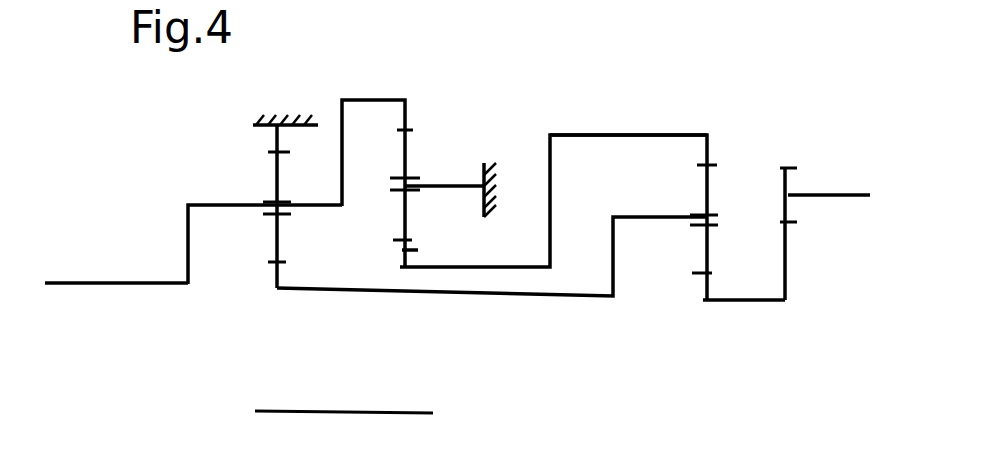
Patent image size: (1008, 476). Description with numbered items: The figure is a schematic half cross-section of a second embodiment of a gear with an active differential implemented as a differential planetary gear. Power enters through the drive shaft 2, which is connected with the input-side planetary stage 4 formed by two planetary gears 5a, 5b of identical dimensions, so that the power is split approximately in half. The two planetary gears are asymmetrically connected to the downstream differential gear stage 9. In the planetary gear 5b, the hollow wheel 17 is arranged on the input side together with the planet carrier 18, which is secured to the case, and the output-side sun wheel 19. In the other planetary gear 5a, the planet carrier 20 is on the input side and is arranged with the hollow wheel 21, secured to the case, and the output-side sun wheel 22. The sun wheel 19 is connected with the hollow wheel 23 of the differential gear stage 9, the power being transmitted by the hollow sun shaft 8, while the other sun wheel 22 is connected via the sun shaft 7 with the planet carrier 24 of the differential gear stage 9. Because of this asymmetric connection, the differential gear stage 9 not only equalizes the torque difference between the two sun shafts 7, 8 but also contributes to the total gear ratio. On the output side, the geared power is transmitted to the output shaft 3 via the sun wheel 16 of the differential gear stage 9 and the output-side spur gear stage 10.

The drive shaft 2 is at (91, 282).
The output shaft 3 is at (852, 193).
The input-side planetary stage 4 is at (344, 433).
The planetary gear 5a is at (270, 305).
The planetary gear 5b is at (398, 305).
The sun shaft 7 is at (465, 293).
The hollow sun shaft 8 is at (485, 268).
The differential gear stage 9 is at (695, 318).
The output-side spur gear stage 10 is at (777, 318).
The sun wheel 16 is at (700, 287).
The hollow wheel 17 is at (407, 112).
The planet carrier 18 is at (445, 185).
The output-side sun wheel 19 is at (418, 250).
The planet carrier 20 is at (207, 205).
The hollow wheel 21 is at (278, 148).
The output-side sun wheel 22 is at (275, 286).
The hollow wheel 23 is at (675, 135).
The planet carrier 24 is at (640, 217).